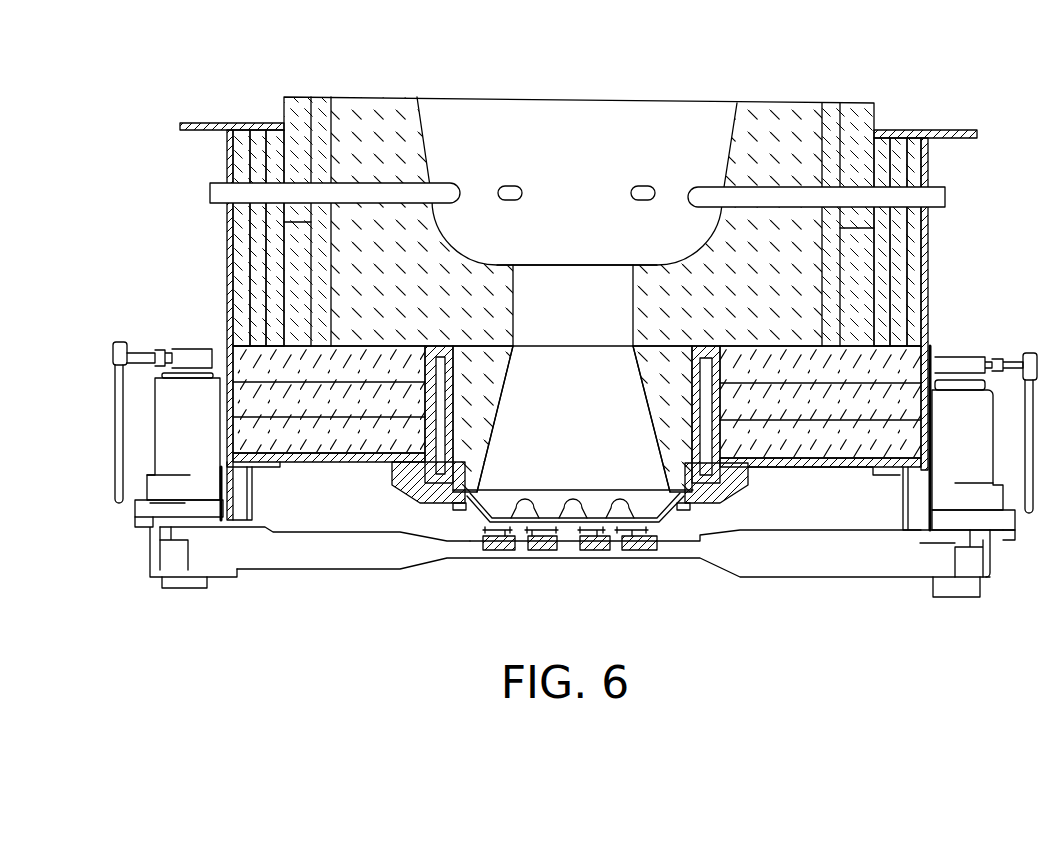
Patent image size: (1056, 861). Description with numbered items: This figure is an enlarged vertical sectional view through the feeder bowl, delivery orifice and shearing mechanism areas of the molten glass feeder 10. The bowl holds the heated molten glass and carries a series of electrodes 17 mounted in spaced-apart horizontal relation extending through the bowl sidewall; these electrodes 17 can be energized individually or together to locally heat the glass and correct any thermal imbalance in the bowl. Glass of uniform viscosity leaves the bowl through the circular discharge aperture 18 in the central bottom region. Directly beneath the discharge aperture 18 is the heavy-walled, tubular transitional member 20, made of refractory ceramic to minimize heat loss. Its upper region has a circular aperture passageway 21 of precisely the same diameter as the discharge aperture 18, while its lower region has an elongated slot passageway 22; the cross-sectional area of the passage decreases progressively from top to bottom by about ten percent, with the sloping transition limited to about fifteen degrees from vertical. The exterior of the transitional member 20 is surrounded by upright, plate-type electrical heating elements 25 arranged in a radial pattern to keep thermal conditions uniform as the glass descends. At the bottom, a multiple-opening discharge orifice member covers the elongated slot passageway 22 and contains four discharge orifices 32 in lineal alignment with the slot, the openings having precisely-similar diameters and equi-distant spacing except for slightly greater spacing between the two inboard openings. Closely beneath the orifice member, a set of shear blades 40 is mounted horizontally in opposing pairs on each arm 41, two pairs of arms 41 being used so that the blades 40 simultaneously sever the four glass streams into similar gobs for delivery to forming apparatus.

The molten glass feeder 10 is at (770, 95).
The electrodes 17 is at (212, 184).
The discharge aperture 18 is at (632, 290).
The transitional member 20 is at (480, 410).
The circular aperture passageway 21 is at (633, 352).
The elongated slot passageway 22 is at (672, 492).
The electrical heating elements 25 is at (395, 490).
The discharge orifices 32 is at (632, 530).
The shear blades 40 is at (658, 541).
The arm 41 is at (480, 548).